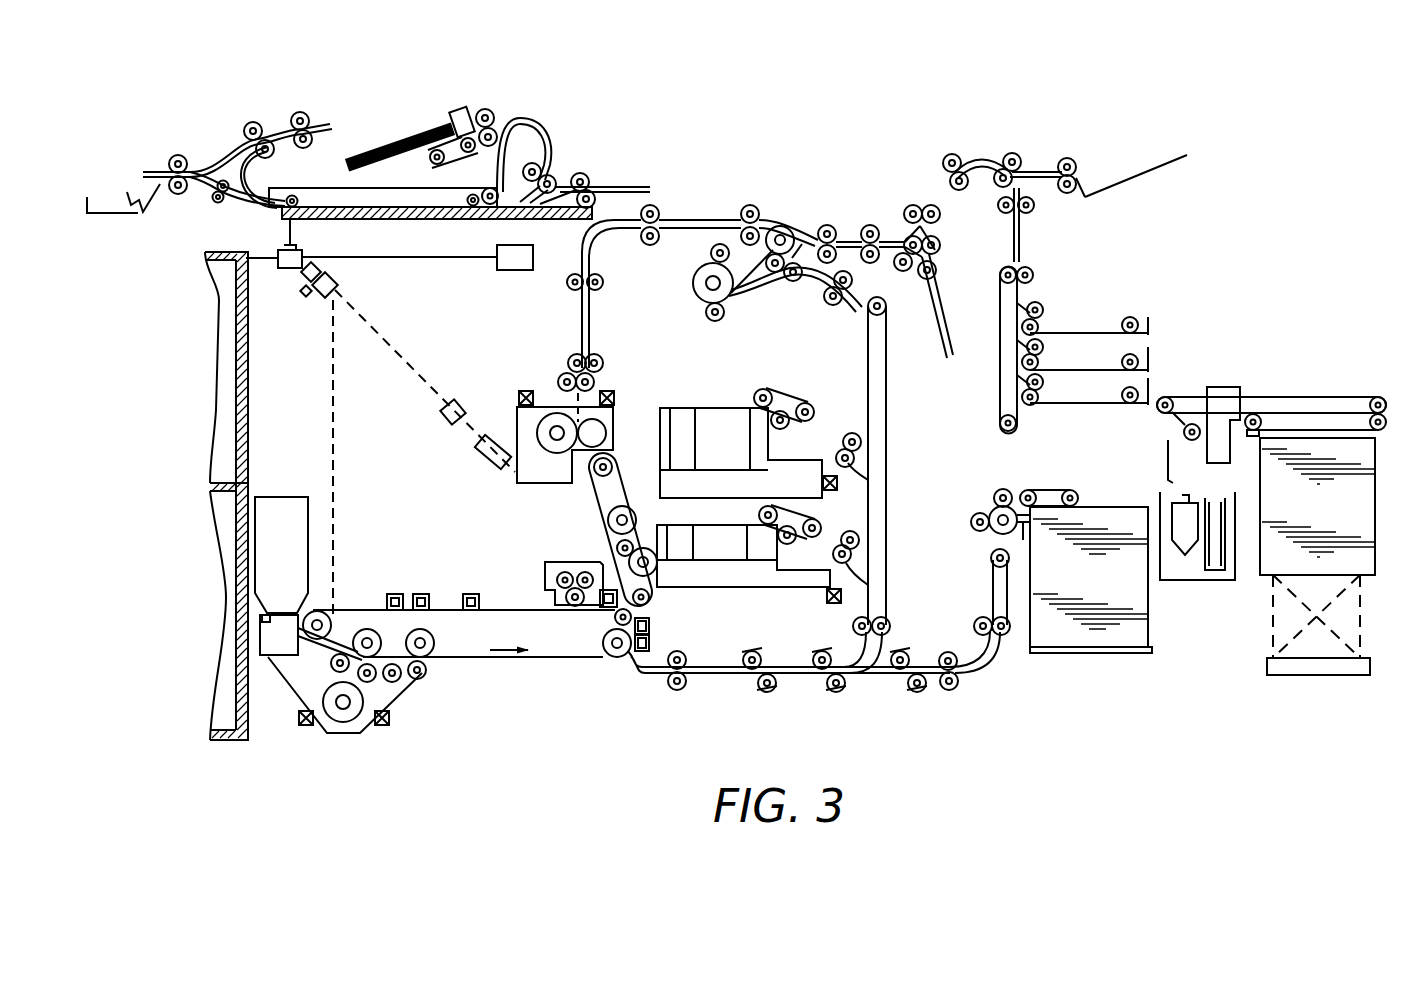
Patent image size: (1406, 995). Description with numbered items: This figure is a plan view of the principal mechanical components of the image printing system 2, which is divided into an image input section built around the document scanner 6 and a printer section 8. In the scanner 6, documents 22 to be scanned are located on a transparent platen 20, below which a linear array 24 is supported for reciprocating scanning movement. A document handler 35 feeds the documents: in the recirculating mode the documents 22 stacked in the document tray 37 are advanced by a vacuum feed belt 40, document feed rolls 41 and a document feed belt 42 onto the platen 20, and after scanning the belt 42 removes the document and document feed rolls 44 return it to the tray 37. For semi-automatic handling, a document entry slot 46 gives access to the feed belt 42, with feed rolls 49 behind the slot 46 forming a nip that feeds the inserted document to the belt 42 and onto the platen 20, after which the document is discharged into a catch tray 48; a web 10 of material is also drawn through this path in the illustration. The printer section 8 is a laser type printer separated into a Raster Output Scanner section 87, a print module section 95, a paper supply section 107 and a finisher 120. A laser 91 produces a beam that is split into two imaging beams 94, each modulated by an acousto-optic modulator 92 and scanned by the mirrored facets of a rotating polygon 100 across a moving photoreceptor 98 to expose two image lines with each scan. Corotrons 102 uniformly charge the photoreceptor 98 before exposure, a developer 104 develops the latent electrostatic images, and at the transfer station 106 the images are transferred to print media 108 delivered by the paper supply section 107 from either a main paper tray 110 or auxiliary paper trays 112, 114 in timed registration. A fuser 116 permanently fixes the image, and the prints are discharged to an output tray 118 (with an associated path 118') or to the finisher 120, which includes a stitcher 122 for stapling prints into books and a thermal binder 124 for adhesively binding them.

The image printing system 2 is at (680, 92).
The document scanner 6 is at (318, 100).
The printer section 8 is at (752, 128).
The web 10 is at (198, 140).
The platen 20 is at (345, 220).
The documents 22 is at (427, 140).
The linear array 24 is at (278, 249).
The document handler 35 is at (405, 100).
The document tray 37 is at (452, 181).
The vacuum feed belt 40 is at (472, 152).
The document feed rolls 41 is at (487, 110).
The document feed belt 42 is at (298, 188).
The document feed rolls 44 is at (296, 117).
The document entry slot 46 is at (600, 178).
The catch tray 48 is at (127, 192).
The feed rolls 49 is at (585, 175).
The Raster Output Scanner section 87 is at (420, 521).
The laser 91 is at (493, 440).
The acousto-optic modulator 92 is at (445, 410).
The imaging beams 94 is at (378, 330).
The print module section 95 is at (495, 668).
The photoreceptor 98 is at (533, 608).
The rotating polygon 100 is at (325, 297).
The corotrons 102 is at (468, 593).
The developer 104 is at (400, 703).
The transfer station 106 is at (622, 672).
The paper supply section 107 is at (790, 635).
The print media 108 is at (1148, 630).
The main paper tray 110 is at (1104, 603).
The auxiliary paper tray 112 is at (740, 590).
The auxiliary paper tray 114 is at (720, 408).
The fuser 116 is at (632, 405).
The output tray 118 is at (1158, 182).
The web path 118' is at (1028, 207).
The finisher 120 is at (1190, 302).
The stitcher 122 is at (1150, 352).
The thermal binder 124 is at (1325, 383).